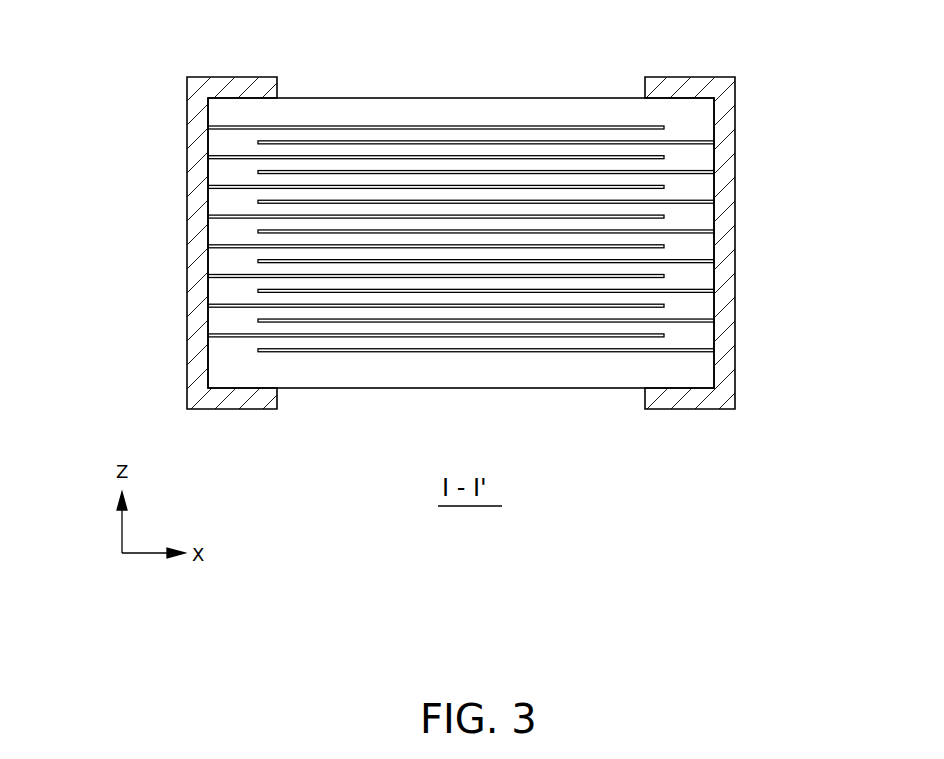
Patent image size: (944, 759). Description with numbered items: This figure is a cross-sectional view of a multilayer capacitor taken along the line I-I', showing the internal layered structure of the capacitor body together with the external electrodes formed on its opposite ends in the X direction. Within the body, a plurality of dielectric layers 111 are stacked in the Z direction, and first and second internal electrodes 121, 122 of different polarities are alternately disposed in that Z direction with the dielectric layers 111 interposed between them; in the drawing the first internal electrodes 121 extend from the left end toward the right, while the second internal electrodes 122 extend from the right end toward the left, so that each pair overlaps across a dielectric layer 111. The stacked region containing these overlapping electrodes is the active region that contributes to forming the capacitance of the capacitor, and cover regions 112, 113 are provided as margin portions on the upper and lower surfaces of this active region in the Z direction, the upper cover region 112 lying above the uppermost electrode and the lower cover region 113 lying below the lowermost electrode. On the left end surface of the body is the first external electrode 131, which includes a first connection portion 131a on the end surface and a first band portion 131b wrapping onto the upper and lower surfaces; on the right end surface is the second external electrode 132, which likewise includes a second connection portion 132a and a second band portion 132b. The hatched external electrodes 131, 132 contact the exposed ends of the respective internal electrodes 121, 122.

The dielectric layer 111 is at (703, 245).
The cover region 112 is at (444, 108).
The cover region 113 is at (569, 373).
The first internal electrode 121 is at (369, 125).
The second internal electrode 122 is at (550, 142).
The first external electrode 131 is at (88, 72).
The first connection portion 131a is at (198, 146).
The first band portion 131b is at (248, 85).
The second external electrode 132 is at (836, 72).
The second connection portion 132a is at (726, 146).
The second band portion 132b is at (676, 85).